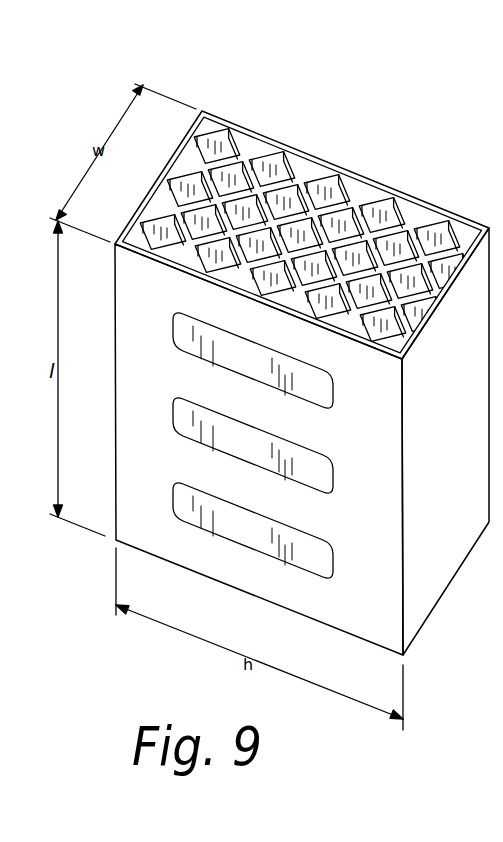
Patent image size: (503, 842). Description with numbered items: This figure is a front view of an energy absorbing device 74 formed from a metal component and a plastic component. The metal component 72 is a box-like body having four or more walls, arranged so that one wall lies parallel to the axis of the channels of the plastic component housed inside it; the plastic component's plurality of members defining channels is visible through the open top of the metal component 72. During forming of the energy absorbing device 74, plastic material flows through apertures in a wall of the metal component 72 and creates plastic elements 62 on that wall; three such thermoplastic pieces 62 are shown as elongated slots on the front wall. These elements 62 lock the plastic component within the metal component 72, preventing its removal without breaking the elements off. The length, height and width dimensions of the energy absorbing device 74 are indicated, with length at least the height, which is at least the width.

The plastic element 62 is at (315, 465).
The metal component 72 is at (427, 553).
The energy absorbing device 74 is at (377, 153).